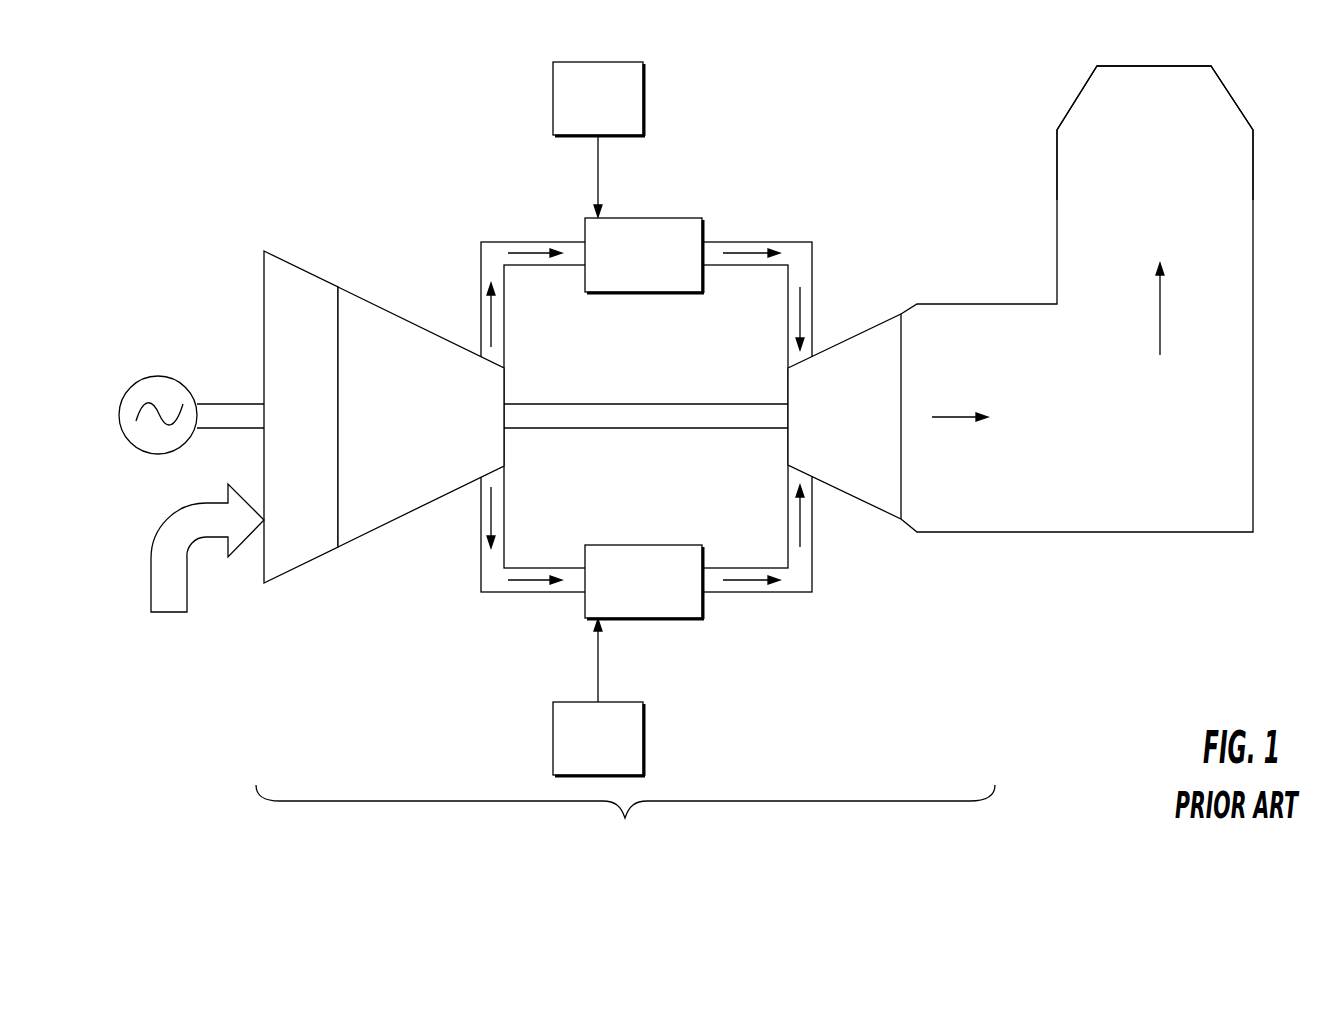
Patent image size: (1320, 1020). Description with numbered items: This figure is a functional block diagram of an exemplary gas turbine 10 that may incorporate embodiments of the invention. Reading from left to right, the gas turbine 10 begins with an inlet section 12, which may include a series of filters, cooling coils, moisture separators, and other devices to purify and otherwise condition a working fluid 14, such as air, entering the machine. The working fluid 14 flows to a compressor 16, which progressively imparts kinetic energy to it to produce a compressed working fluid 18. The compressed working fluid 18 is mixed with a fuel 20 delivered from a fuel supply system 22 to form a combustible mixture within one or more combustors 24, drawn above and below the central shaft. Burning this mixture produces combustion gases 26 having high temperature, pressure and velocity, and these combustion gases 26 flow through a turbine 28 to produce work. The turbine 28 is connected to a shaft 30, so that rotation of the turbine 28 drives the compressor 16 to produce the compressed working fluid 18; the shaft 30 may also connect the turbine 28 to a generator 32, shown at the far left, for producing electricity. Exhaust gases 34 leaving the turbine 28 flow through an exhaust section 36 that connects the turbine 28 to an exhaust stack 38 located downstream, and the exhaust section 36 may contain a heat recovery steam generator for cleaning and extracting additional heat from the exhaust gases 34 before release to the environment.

The gas turbine 10 is at (625, 820).
The inlet section 12 is at (314, 430).
The working fluid 14 is at (169, 612).
The compressor 16 is at (426, 430).
The compressed working fluid 18 is at (481, 327).
The fuel 20 is at (598, 187).
The fuel supply system 22 is at (609, 113).
The combustor 24 is at (658, 277).
The combustion gases 26 is at (803, 312).
The turbine 28 is at (863, 434).
The shaft 30 is at (637, 430).
The generator 32 is at (147, 377).
The exhaust gases 34 is at (948, 418).
The exhaust section 36 is at (1174, 434).
The exhaust stack 38 is at (1255, 186).